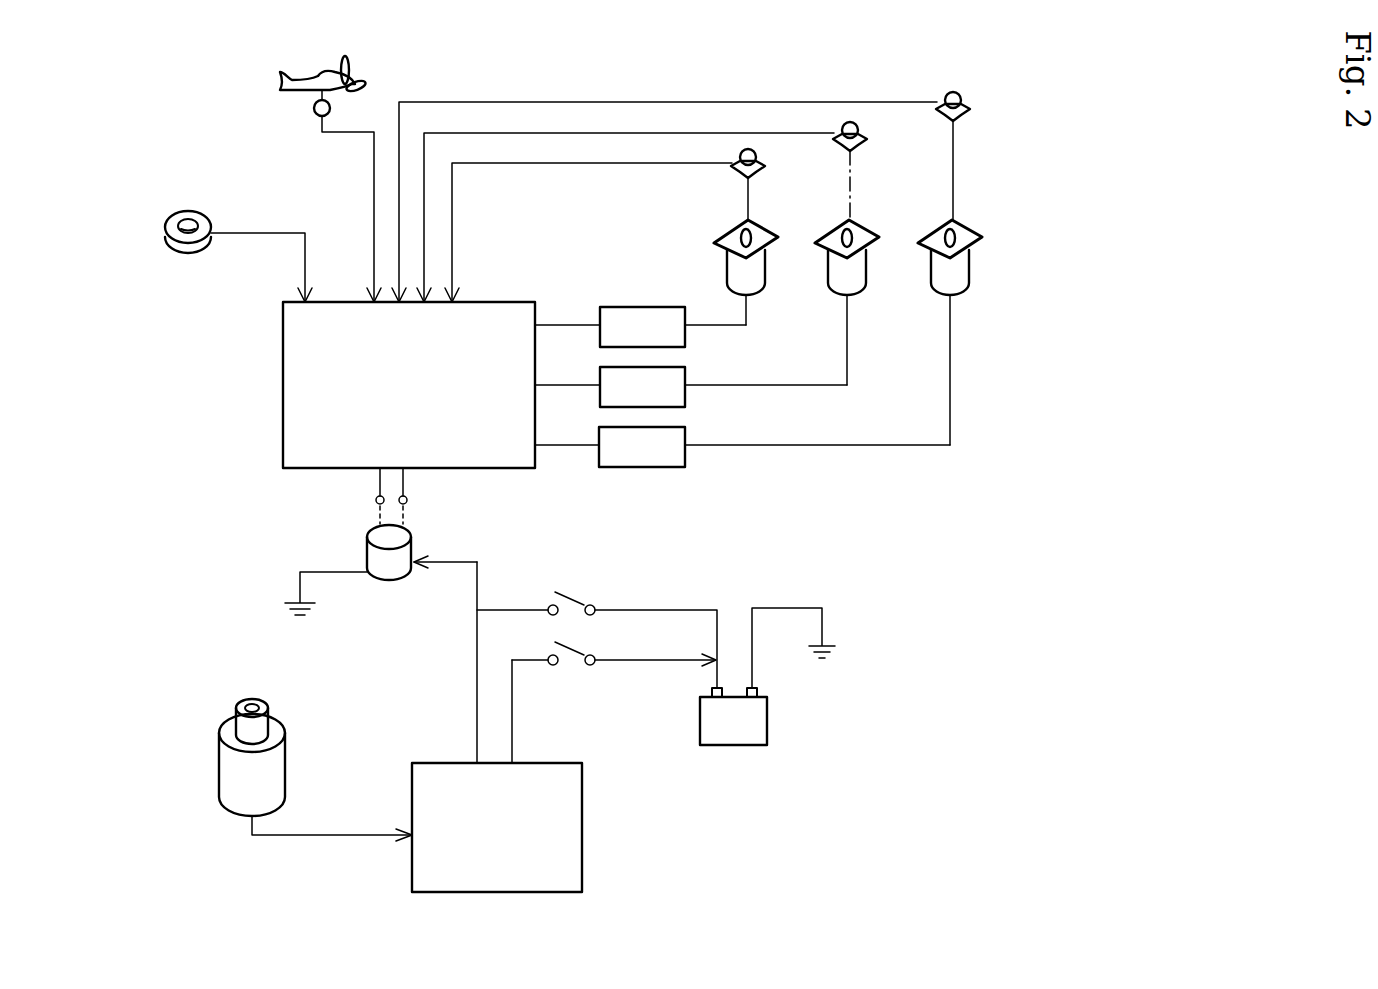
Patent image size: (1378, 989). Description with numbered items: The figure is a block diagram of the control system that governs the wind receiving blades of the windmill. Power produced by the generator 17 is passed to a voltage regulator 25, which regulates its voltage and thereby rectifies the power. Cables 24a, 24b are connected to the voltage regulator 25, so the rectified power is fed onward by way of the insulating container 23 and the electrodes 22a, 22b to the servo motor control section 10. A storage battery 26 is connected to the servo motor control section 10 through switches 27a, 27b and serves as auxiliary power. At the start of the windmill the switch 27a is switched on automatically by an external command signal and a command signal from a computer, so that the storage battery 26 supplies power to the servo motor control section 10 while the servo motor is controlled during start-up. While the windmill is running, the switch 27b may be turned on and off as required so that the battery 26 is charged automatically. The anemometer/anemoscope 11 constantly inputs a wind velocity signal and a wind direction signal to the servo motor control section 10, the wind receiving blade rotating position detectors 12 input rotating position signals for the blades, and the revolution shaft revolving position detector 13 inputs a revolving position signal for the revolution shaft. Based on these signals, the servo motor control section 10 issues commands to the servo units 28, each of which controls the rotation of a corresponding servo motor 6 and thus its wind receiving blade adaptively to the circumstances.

The servo motor 6 is at (756, 287).
The servo motor control section 10 is at (290, 388).
The anemometer/anemoscope 11 is at (288, 96).
The wind receiving blade rotating position detector 12 is at (762, 174).
The revolution shaft revolving position detector 13 is at (170, 247).
The generator 17 is at (225, 770).
The electrode 22a is at (339, 496).
The electrode 22b is at (440, 496).
The insulating container 23 is at (388, 578).
The cable 24a is at (452, 565).
The cable 24b is at (494, 662).
The voltage regulator 25 is at (567, 860).
The storage battery 26 is at (755, 725).
The switch 27a is at (597, 629).
The switch 27b is at (614, 674).
The servo unit 28 is at (643, 307).